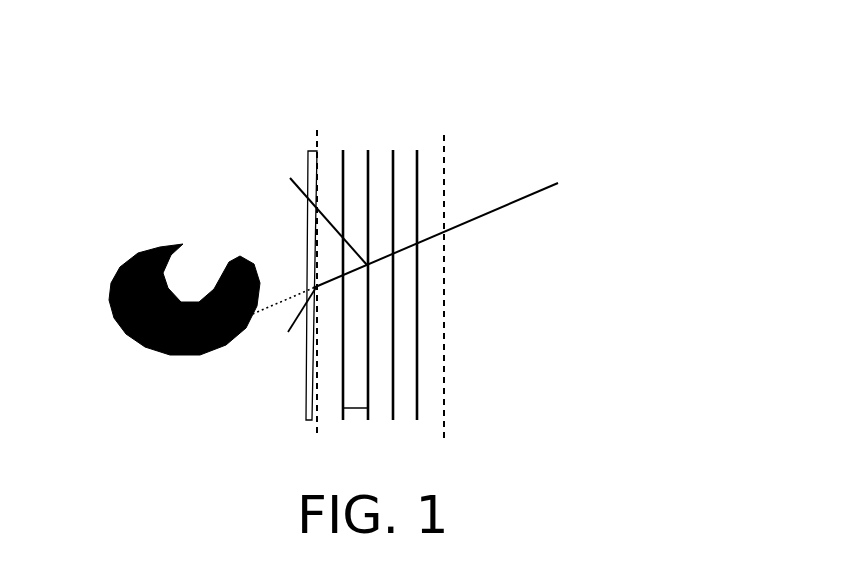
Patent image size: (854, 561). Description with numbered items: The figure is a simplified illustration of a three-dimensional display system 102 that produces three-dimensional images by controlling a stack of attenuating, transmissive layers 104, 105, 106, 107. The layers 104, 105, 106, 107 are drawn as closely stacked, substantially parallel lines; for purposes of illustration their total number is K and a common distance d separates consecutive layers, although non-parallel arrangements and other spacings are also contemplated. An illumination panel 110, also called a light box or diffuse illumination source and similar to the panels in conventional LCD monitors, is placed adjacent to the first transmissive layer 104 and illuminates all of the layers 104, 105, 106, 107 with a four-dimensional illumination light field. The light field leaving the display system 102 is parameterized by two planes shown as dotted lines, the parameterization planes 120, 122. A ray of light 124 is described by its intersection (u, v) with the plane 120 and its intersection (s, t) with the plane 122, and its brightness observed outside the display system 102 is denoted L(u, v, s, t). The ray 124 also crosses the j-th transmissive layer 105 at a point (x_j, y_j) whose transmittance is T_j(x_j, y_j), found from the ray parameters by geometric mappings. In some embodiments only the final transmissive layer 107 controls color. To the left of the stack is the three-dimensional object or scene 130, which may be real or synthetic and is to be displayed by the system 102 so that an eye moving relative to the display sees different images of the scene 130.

The 3D display system 102 is at (492, 337).
The transmissive layer 104 is at (343, 150).
The j-th transmissive layer 105 is at (368, 150).
The transmissive layer 106 is at (393, 150).
The final transmissive layer 107 is at (417, 150).
The illumination panel 110 is at (307, 403).
The parameterization plane 120 is at (317, 138).
The parameterization plane 122 is at (445, 140).
The ray of light 124 is at (512, 200).
The 3D object or scene 130 is at (123, 318).